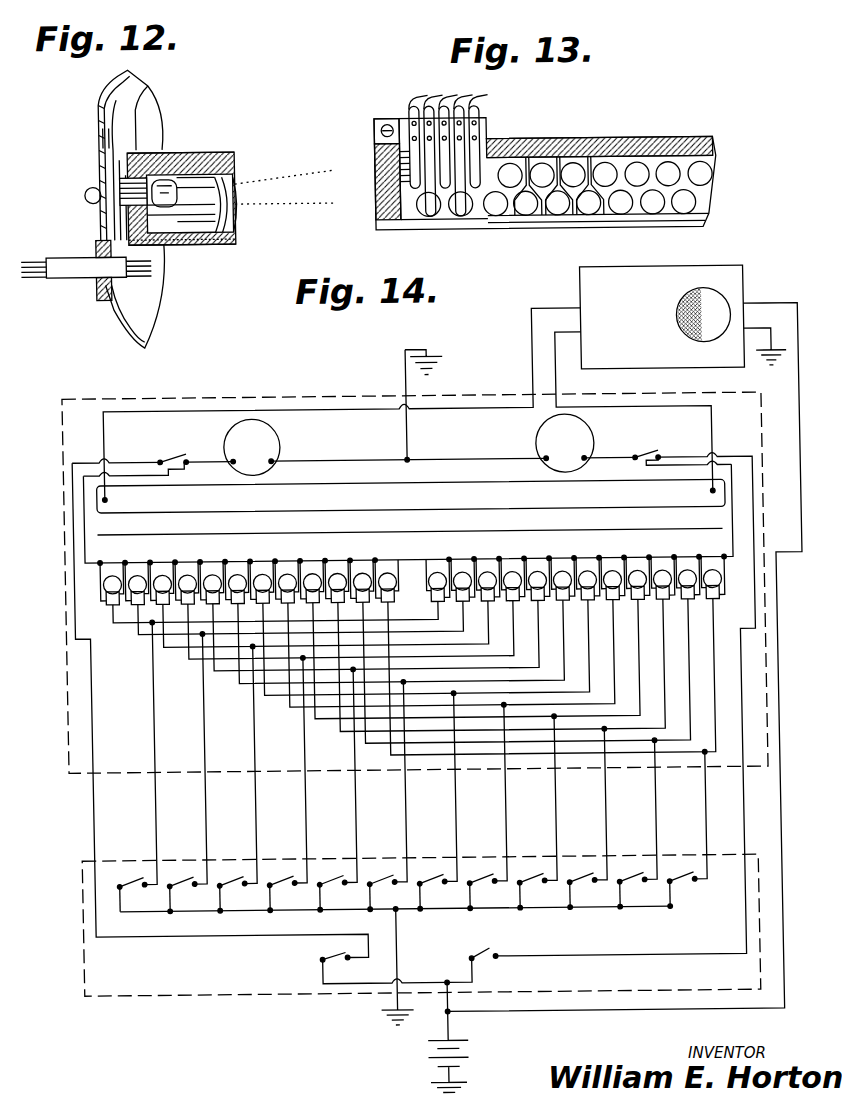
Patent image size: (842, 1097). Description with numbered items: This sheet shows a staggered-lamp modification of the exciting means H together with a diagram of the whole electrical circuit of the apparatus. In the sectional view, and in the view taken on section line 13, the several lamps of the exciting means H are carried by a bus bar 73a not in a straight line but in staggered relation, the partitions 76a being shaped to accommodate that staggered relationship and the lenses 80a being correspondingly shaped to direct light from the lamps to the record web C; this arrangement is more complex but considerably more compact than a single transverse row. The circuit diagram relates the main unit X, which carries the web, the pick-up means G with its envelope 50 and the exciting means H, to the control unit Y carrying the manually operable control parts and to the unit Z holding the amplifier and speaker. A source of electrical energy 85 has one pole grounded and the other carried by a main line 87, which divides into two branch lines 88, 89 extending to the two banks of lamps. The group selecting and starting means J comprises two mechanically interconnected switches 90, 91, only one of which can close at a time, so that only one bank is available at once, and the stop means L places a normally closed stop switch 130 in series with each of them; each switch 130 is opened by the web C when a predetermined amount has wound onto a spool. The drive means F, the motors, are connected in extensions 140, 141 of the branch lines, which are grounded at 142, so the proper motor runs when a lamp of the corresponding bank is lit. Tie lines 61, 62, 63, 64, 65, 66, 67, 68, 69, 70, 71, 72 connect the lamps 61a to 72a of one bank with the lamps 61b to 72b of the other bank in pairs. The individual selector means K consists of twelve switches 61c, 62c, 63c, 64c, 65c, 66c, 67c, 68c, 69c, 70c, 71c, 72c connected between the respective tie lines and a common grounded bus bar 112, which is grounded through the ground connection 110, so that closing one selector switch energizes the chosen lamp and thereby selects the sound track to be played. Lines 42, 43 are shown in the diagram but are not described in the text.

In FIG. 12, the section line 13 is at (98, 137).
In FIG. 12, the bus bar 73a is at (192, 158).
In FIG. 13, the bus bar 73a is at (627, 138).
In FIG. 12, the lens 80a is at (235, 226).
In FIG. 13, the lens 80a is at (699, 165).
In FIG. 12, the partition 76a is at (197, 236).
In FIG. 13, the partition 76a is at (592, 211).
In FIG. 12, the exciting means H is at (181, 138).
In FIG. 13, the exciting means H is at (406, 93).
In FIG. 14, the exciting means H is at (99, 605).
In FIG. 14, the main unit X is at (259, 395).
In FIG. 14, the control unit Y is at (162, 1000).
In FIG. 14, the amplifier and speaker unit Z is at (582, 284).
In FIG. 14, the drive means F is at (288, 439).
In FIG. 14, the stop means L is at (158, 452).
In FIG. 14, the pick-up means G is at (228, 526).
In FIG. 14, the record web C is at (124, 536).
In FIG. 14, the individual selector means K is at (149, 920).
In FIG. 14, the group selecting and starting means J is at (309, 971).
In FIG. 14, the extension of line branch 140 is at (207, 461).
In FIG. 14, the extension of line branch 141 is at (508, 461).
In FIG. 14, the stop switch 130 is at (174, 480).
In FIG. 14, the ground connection 142 is at (446, 357).
In FIG. 14, the envelope 50 is at (338, 487).
In FIG. 14, the conductor 42 is at (440, 515).
In FIG. 14, the conductor 43 is at (442, 537).
In FIG. 14, the lamp 61a is at (102, 585).
In FIG. 14, the lamp 72a is at (388, 575).
In FIG. 14, the lamp 61b is at (428, 585).
In FIG. 14, the lamp 72b is at (712, 575).
In FIG. 14, the tie line 61 is at (131, 626).
In FIG. 14, the tie line 62 is at (146, 638).
In FIG. 14, the tie line 63 is at (192, 651).
In FIG. 14, the tie line 64 is at (202, 663).
In FIG. 14, the tie line 65 is at (244, 675).
In FIG. 14, the tie line 66 is at (254, 688).
In FIG. 14, the tie line 67 is at (294, 700).
In FIG. 14, the tie line 68 is at (301, 712).
In FIG. 14, the tie line 69 is at (342, 724).
In FIG. 14, the tie line 70 is at (360, 737).
In FIG. 14, the tie line 71 is at (403, 749).
In FIG. 14, the tie line 72 is at (450, 761).
In FIG. 14, the selector switch 61c is at (132, 876).
In FIG. 14, the selector switch 62c is at (182, 876).
In FIG. 14, the selector switch 63c is at (232, 876).
In FIG. 14, the selector switch 64c is at (282, 876).
In FIG. 14, the selector switch 65c is at (332, 876).
In FIG. 14, the selector switch 66c is at (382, 876).
In FIG. 14, the selector switch 67c is at (432, 876).
In FIG. 14, the selector switch 68c is at (482, 876).
In FIG. 14, the selector switch 69c is at (532, 876).
In FIG. 14, the selector switch 70c is at (582, 876).
In FIG. 14, the selector switch 71c is at (632, 876).
In FIG. 14, the selector switch 72c is at (682, 876).
In FIG. 14, the common grounded bus bar 112 is at (445, 914).
In FIG. 14, the branch line 88 is at (206, 940).
In FIG. 14, the branch line 89 is at (560, 957).
In FIG. 14, the switch 90 is at (321, 956).
In FIG. 14, the switch 91 is at (483, 950).
In FIG. 14, the ground connection 110 is at (374, 1019).
In FIG. 14, the source of electrical energy 85 is at (462, 1056).
In FIG. 14, the main line 87 is at (412, 1031).